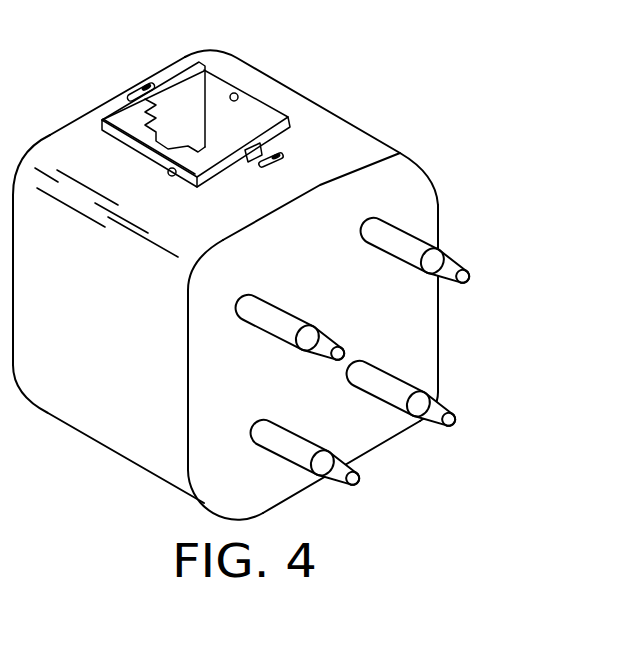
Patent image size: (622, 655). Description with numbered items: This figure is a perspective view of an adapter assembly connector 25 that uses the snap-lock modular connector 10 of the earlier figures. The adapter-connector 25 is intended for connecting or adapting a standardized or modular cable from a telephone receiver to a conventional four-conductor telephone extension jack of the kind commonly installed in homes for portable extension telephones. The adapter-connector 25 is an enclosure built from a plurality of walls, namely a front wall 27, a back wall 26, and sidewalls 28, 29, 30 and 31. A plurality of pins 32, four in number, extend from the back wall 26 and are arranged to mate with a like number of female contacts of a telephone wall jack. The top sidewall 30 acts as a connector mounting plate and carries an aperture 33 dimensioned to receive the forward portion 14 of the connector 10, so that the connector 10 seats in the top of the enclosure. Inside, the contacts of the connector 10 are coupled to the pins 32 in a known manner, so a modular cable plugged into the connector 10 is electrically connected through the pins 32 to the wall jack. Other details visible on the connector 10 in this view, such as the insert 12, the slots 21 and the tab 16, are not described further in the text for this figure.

The snap-lock modular connector 10 is at (186, 117).
The contact insert block 12 is at (197, 127).
The forward portion 14 is at (113, 111).
The latch tab 16 is at (248, 162).
The keying slots 21 is at (139, 88).
The adapter assembly connector 25 is at (212, 27).
The back wall 26 is at (312, 298).
The front wall 27 is at (58, 130).
The sidewall 28 is at (382, 450).
The sidewall 29 is at (441, 207).
The top sidewall 30 is at (240, 220).
The sidewall 31 is at (83, 347).
The pins 32 is at (401, 230).
The aperture 33 is at (169, 176).